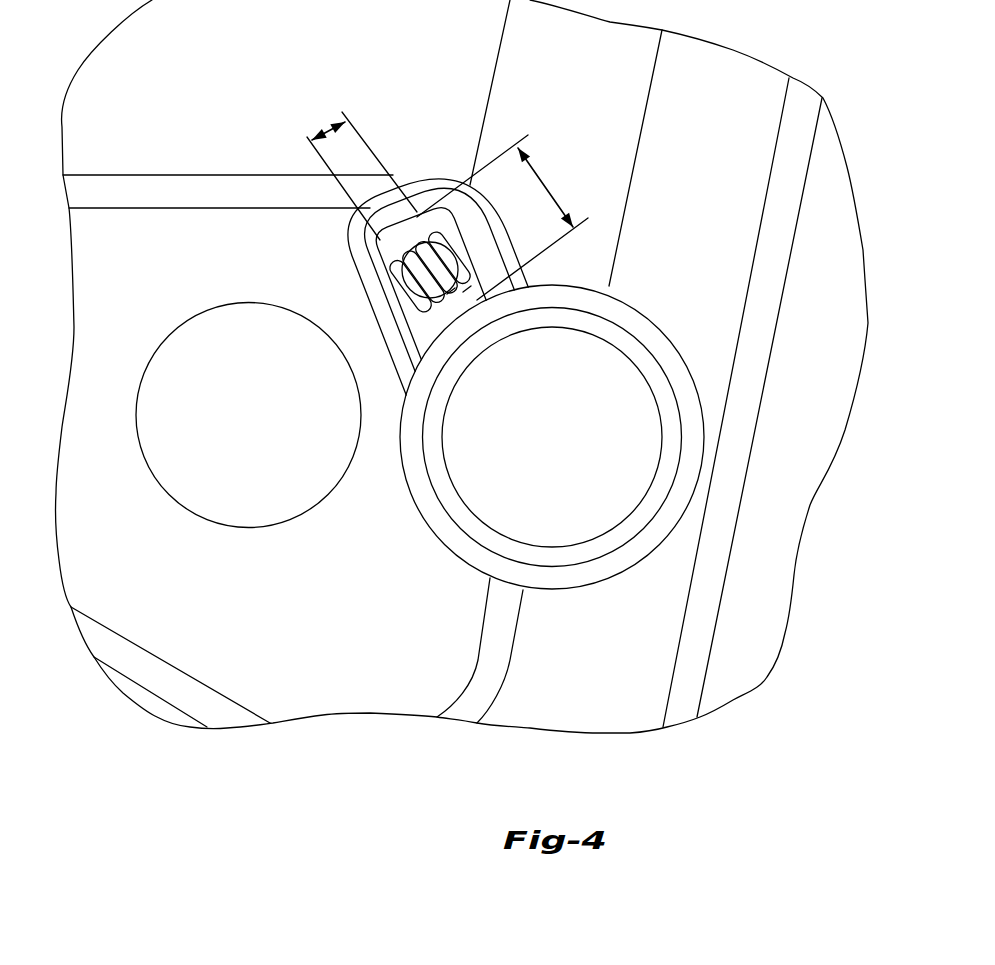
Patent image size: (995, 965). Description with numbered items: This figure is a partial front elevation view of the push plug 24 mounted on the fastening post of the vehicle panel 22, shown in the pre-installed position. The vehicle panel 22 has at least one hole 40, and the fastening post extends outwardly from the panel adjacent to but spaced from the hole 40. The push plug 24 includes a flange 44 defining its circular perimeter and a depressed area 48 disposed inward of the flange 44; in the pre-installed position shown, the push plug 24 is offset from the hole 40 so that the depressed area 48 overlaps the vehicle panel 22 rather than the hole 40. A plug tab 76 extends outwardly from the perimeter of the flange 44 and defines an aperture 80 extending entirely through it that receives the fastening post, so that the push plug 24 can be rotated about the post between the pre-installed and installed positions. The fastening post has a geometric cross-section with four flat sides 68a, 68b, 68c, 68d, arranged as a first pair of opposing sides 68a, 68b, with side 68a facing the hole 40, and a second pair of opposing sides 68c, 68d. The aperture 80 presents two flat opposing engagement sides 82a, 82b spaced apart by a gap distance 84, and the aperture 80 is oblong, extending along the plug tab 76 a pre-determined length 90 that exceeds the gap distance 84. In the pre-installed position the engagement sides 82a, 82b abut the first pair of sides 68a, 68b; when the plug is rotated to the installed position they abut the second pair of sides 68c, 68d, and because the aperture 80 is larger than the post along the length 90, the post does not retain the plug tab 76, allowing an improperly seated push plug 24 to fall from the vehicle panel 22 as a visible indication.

The vehicle panel 22 is at (340, 682).
The push plug 24 is at (645, 303).
The hole 40 is at (227, 493).
The flange 44 is at (597, 573).
The depressed area 48 is at (622, 405).
The plug tab 76 is at (373, 275).
The aperture 80 is at (403, 245).
The flat side 68a is at (403, 287).
The flat side 68b is at (457, 250).
The flat side 68c is at (413, 242).
The flat side 68d is at (438, 313).
The engagement side 82a is at (450, 290).
The engagement side 82b is at (470, 290).
The gap distance 84 is at (318, 133).
The pre-determined length 90 is at (552, 183).